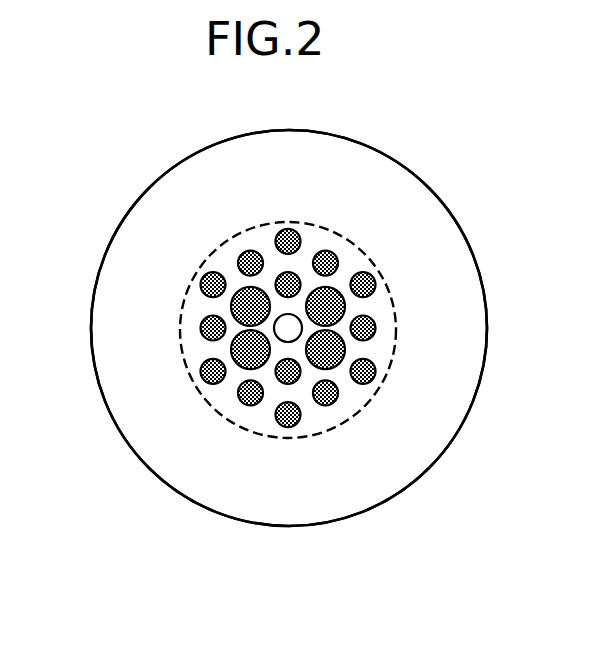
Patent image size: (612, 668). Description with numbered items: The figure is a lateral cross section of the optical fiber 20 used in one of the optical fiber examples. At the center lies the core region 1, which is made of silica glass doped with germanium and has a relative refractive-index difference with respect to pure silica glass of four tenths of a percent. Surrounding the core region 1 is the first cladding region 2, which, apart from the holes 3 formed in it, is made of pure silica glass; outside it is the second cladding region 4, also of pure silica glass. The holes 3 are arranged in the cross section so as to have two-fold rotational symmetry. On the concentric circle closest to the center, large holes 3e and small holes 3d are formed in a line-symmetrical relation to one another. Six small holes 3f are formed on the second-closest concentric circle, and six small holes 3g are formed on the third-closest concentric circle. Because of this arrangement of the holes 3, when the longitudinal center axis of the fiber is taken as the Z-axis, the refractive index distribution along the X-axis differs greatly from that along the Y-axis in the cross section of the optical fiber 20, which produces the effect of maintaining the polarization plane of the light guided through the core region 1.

The optical fiber 20 is at (349, 138).
The core region 1 is at (374, 240).
The first cladding region 2 is at (356, 329).
The holes 3 is at (147, 228).
The small holes 3d is at (229, 496).
The large holes 3e is at (157, 444).
The small holes 3f is at (361, 497).
The small holes 3g is at (271, 518).
The second cladding region 4 is at (427, 450).